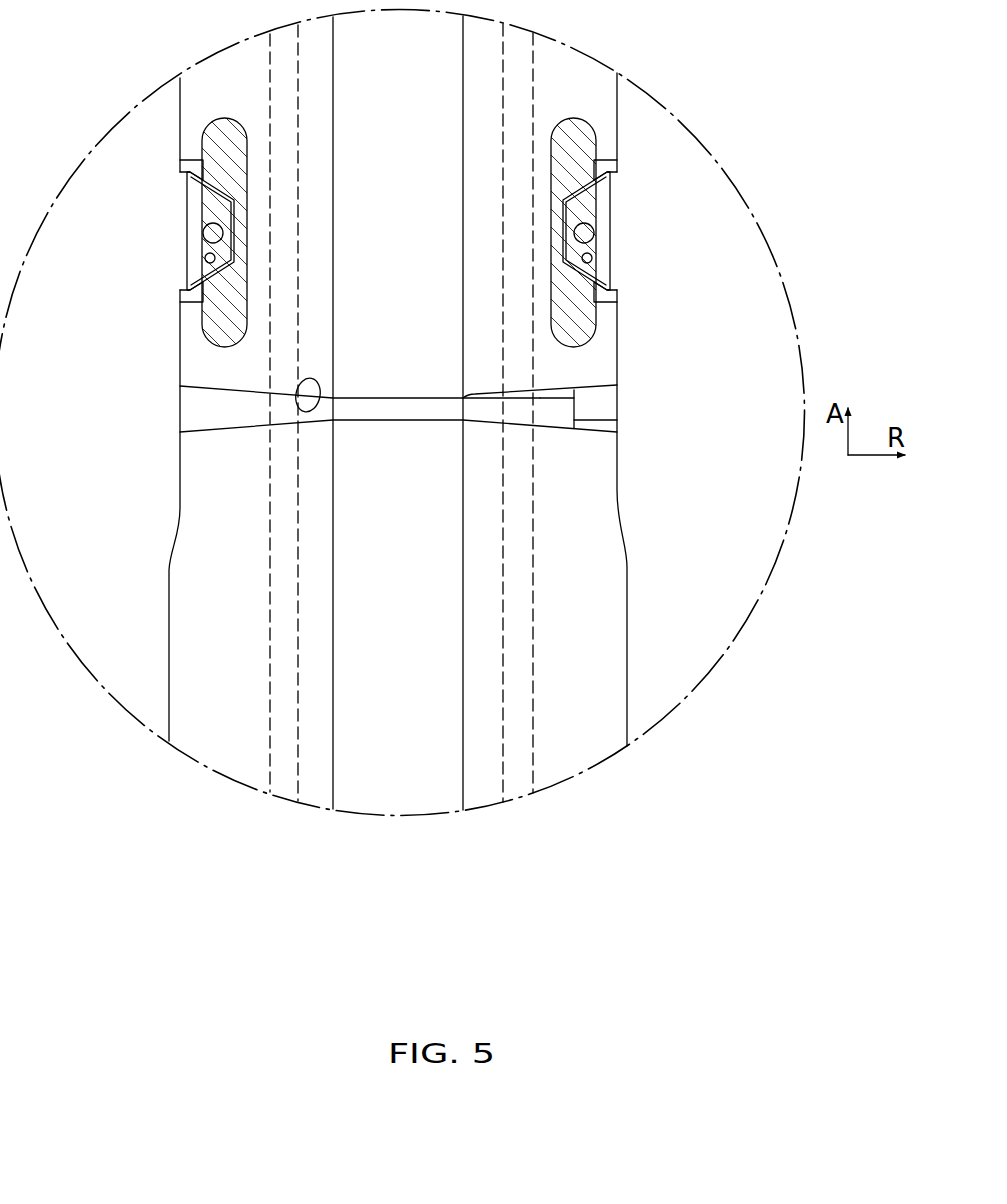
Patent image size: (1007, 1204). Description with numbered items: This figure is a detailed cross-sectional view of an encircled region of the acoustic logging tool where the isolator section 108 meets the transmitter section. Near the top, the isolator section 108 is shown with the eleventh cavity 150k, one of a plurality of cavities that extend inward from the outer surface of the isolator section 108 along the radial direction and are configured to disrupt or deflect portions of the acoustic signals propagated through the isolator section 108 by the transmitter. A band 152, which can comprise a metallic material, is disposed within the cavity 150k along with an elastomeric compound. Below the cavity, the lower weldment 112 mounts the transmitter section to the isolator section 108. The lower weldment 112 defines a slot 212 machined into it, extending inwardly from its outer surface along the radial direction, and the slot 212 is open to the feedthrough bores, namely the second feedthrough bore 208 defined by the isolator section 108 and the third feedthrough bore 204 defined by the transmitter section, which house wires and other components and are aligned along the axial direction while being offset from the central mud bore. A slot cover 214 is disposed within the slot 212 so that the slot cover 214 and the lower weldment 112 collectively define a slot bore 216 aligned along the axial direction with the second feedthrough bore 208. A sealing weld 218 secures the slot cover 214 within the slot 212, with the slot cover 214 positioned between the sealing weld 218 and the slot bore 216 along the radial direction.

The isolator section 108 is at (625, 88).
The band 152 is at (625, 188).
The eleventh cavity 150k is at (625, 257).
The lower weldment 112 is at (623, 403).
The slot 212 is at (607, 413).
The slot cover 214 is at (558, 410).
The sealing weld 218 is at (587, 422).
The slot bore 216 is at (522, 408).
The third feedthrough bore 204 is at (517, 562).
The second feedthrough bore 208 is at (513, 176).